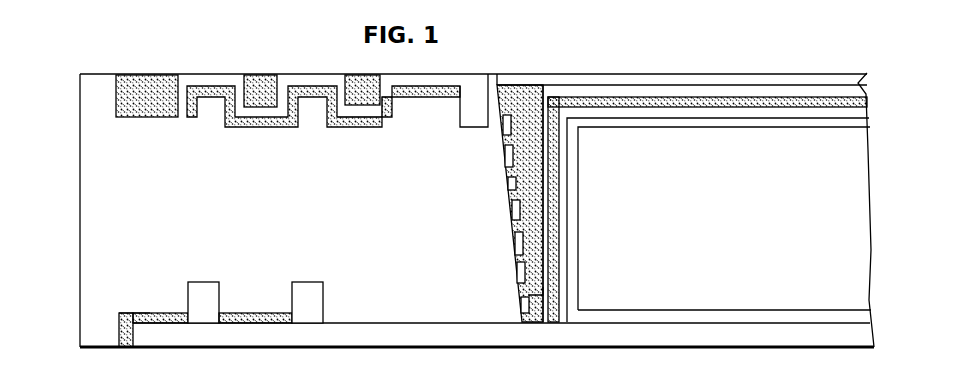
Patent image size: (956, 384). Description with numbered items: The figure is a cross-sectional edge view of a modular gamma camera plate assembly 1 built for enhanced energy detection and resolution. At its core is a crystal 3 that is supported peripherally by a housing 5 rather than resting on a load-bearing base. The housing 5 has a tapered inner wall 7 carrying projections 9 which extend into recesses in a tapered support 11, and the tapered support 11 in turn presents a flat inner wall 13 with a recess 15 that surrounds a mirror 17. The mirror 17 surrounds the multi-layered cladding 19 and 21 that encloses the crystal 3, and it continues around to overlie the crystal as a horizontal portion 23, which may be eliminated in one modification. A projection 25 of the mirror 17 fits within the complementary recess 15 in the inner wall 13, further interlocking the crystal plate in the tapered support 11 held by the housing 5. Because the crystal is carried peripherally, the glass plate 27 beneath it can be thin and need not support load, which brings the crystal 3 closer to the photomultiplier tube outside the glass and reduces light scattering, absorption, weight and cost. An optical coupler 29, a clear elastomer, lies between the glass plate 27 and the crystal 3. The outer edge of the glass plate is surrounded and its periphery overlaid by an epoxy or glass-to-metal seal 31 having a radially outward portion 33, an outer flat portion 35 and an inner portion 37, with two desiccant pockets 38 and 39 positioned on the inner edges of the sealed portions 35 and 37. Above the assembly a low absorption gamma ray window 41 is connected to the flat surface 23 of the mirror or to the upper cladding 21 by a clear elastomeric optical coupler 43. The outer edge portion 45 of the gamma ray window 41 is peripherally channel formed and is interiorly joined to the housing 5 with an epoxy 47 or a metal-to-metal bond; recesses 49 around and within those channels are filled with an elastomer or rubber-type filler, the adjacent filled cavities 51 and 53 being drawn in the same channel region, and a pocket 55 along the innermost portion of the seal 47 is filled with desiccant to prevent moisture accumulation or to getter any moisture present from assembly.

The modular camera plate assembly 1 is at (246, 357).
The crystal 3 is at (724, 290).
The housing 5 is at (417, 303).
The tapered inner wall 7 is at (512, 227).
The projections 9 is at (508, 183).
The tapered support 11 is at (523, 100).
The flat inner wall 13 is at (541, 126).
The recess 15 is at (540, 244).
The mirror 17 is at (555, 194).
The cladding 19 is at (576, 146).
The upper cladding 21 is at (566, 233).
The horizontal portion of the mirror 23 is at (757, 107).
The projection 25 is at (530, 286).
The glass plate 27 is at (650, 347).
The optical coupler 29 is at (800, 322).
The epoxy or glass-to-metal seal 31 is at (143, 312).
The radially outward portion 33 is at (119, 330).
The outer flat portion 35 is at (173, 311).
The inner portion 37 is at (270, 311).
The desiccant pocket 38 is at (204, 294).
The desiccant pocket 39 is at (316, 306).
The gamma ray window 41 is at (727, 73).
The clear elastomeric optical coupler 43 is at (642, 83).
The outer edge portion 45 is at (219, 73).
The epoxy 47 is at (386, 128).
The recesses 49 is at (159, 74).
The contact pad 51 is at (265, 76).
The contact pad 53 is at (359, 74).
The pocket 55 is at (470, 120).